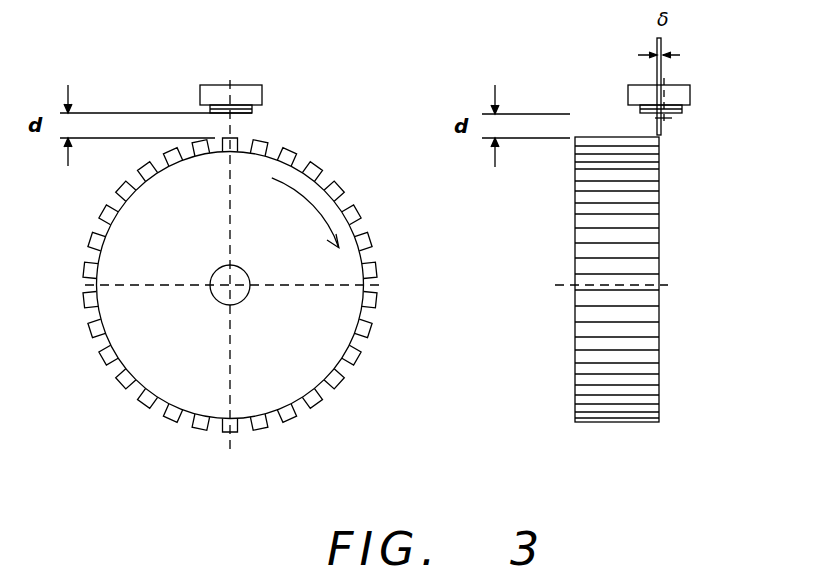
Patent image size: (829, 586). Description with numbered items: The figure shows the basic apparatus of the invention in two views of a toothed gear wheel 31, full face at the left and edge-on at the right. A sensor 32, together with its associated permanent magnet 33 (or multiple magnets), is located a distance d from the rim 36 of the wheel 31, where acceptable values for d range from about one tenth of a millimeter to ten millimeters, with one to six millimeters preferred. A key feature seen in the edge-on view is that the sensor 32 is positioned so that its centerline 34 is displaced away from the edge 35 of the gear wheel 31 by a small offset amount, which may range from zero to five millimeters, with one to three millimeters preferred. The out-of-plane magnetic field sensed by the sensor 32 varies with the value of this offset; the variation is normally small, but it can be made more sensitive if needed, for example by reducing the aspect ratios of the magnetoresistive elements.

The gear wheel 31 is at (346, 305).
The sensor 32 is at (254, 108).
The permanent magnet 33 is at (252, 93).
The centerline 34 is at (668, 118).
The edge 35 is at (657, 38).
The rim 36 is at (617, 426).